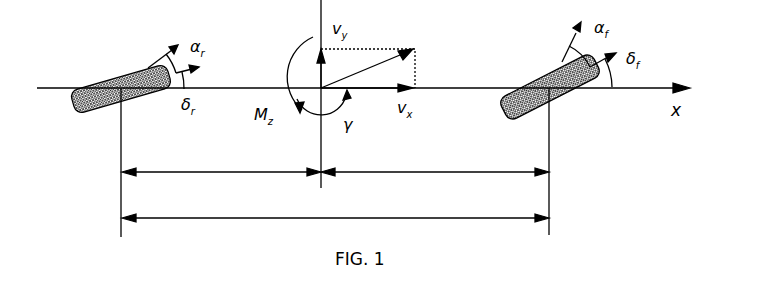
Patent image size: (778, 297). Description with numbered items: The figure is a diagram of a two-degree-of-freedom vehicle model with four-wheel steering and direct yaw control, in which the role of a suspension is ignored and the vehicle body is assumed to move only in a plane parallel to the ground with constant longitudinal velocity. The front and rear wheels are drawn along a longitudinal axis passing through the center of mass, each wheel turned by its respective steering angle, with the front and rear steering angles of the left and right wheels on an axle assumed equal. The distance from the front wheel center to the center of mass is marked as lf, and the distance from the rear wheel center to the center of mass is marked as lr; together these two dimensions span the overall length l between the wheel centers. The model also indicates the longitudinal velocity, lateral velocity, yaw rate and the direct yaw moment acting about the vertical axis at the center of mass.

The distance from rear wheel center to center of mass lr is at (195, 150).
The distance from front wheel center to center of mass lf is at (461, 143).
The wheelbase l is at (335, 206).